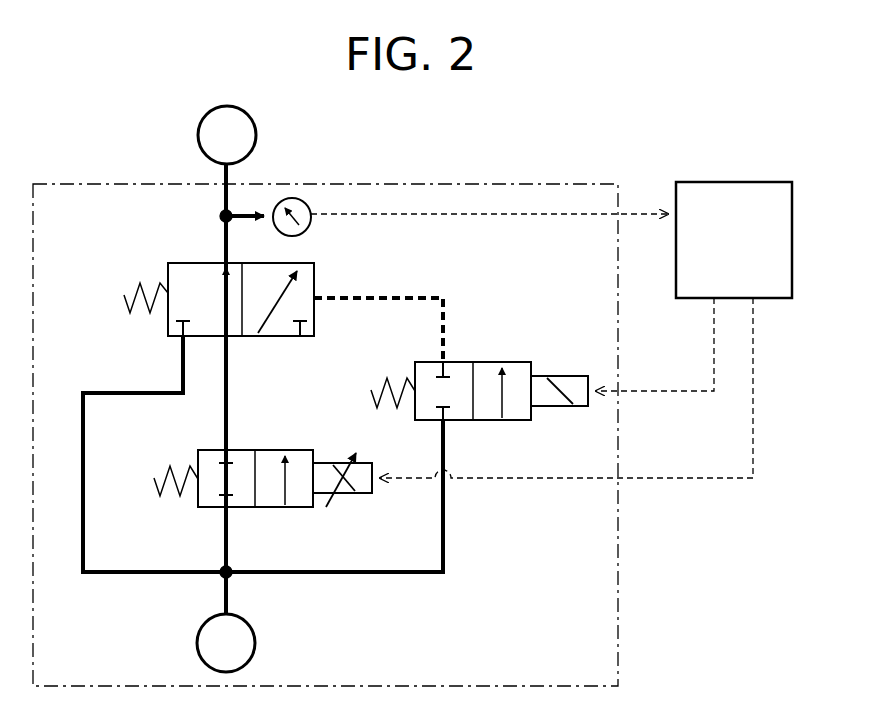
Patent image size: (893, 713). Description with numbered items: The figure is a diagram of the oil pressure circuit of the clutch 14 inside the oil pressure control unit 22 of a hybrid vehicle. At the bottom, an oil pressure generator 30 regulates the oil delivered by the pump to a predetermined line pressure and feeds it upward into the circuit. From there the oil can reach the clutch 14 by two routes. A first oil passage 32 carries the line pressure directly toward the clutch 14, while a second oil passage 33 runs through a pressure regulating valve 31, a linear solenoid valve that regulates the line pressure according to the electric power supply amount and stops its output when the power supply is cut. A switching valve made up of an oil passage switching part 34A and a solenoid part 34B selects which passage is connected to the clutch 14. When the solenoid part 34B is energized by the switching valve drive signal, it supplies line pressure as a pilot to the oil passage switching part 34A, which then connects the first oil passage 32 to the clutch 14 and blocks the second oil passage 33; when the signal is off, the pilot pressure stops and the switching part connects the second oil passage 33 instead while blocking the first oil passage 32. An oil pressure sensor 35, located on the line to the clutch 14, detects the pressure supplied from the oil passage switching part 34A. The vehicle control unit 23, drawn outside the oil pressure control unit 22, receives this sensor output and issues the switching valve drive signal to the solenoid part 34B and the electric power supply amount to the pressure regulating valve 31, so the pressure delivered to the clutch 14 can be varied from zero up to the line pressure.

The clutch 14 is at (256, 135).
The oil pressure control unit 22 is at (618, 602).
The vehicle control unit 23 is at (775, 298).
The oil pressure generator 30 is at (255, 643).
The pressure regulating valve 31 is at (302, 507).
The first oil passage 32 is at (83, 480).
The second oil passage 33 is at (227, 413).
The oil passage switching part 34A is at (275, 336).
The solenoid part 34B is at (515, 362).
The oil pressure sensor 35 is at (306, 231).